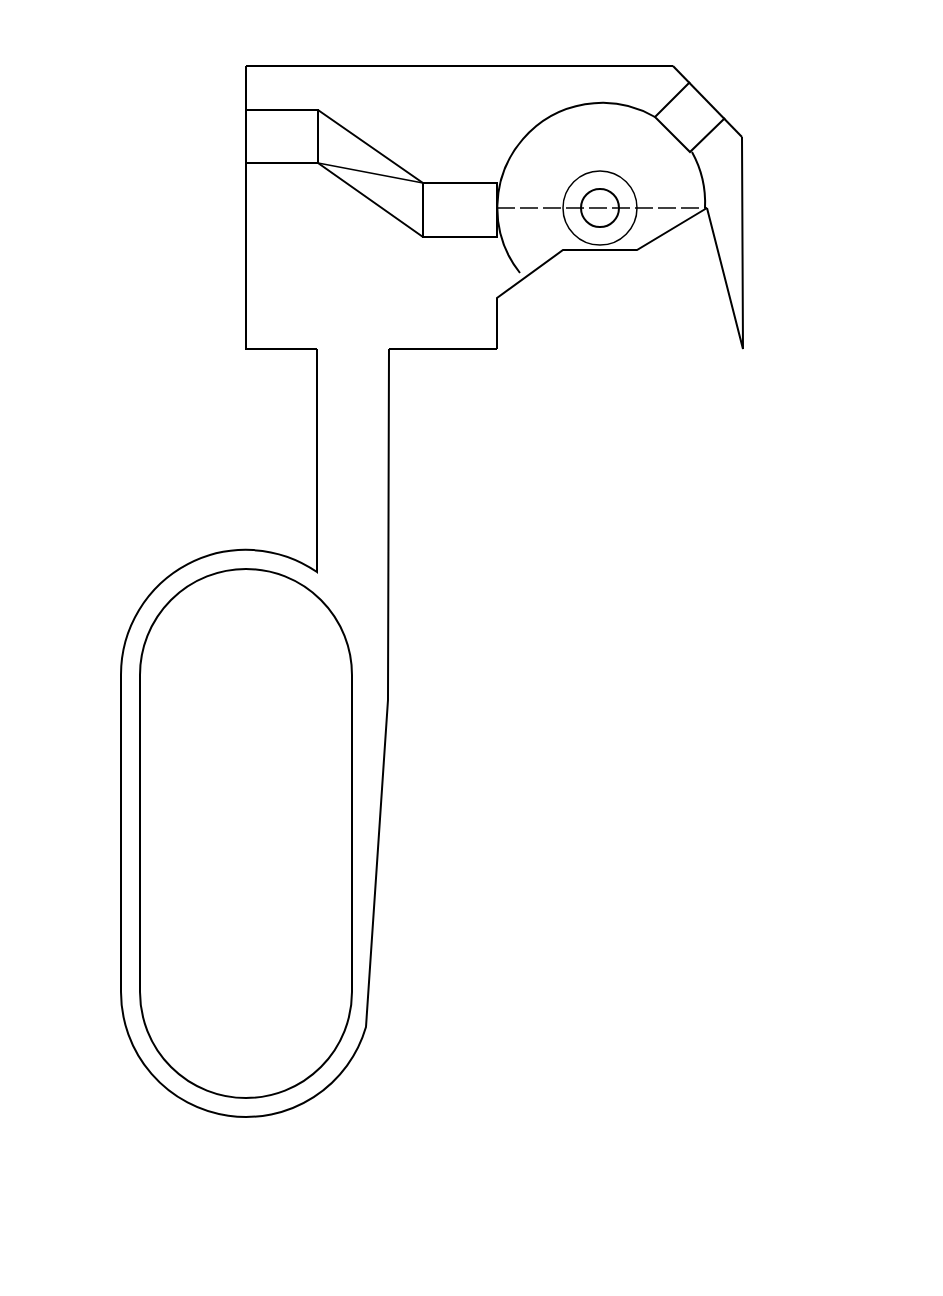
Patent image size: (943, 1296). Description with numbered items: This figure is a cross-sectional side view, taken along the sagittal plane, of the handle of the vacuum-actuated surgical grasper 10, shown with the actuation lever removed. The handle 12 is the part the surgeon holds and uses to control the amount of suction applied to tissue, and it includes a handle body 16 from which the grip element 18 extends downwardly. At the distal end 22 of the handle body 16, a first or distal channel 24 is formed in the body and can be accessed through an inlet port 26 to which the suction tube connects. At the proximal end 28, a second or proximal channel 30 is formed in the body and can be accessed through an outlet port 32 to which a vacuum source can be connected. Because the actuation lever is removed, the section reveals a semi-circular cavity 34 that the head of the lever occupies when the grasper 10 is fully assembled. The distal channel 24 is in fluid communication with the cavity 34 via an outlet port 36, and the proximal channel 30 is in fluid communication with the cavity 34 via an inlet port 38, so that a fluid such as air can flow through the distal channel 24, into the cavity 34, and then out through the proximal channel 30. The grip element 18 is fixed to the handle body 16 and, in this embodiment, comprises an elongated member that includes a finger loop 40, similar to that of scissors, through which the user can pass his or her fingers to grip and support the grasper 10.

The vacuum-actuated surgical grasper 10 is at (88, 51).
The handle 12 is at (582, 39).
The handle body 16 is at (458, 66).
The grip element 18 is at (62, 876).
The distal end 22 is at (203, 257).
The distal channel 24 is at (255, 145).
The inlet port 26 is at (227, 121).
The proximal end 28 is at (781, 198).
The proximal channel 30 is at (690, 100).
The outlet port 32 is at (734, 102).
The semi-circular cavity 34 is at (656, 245).
The outlet port 36 is at (512, 192).
The inlet port 38 is at (663, 139).
The finger loop 40 is at (155, 1068).